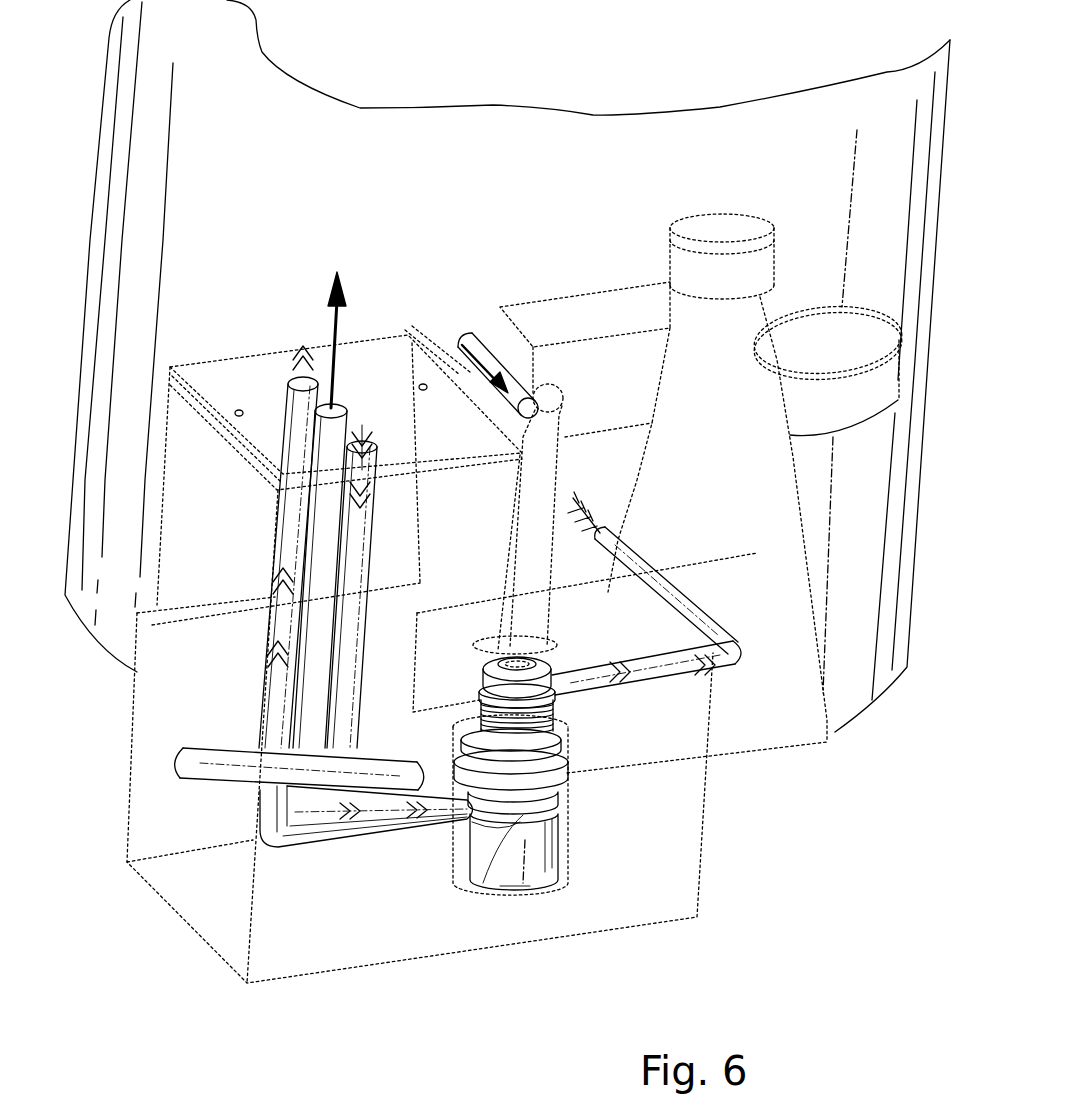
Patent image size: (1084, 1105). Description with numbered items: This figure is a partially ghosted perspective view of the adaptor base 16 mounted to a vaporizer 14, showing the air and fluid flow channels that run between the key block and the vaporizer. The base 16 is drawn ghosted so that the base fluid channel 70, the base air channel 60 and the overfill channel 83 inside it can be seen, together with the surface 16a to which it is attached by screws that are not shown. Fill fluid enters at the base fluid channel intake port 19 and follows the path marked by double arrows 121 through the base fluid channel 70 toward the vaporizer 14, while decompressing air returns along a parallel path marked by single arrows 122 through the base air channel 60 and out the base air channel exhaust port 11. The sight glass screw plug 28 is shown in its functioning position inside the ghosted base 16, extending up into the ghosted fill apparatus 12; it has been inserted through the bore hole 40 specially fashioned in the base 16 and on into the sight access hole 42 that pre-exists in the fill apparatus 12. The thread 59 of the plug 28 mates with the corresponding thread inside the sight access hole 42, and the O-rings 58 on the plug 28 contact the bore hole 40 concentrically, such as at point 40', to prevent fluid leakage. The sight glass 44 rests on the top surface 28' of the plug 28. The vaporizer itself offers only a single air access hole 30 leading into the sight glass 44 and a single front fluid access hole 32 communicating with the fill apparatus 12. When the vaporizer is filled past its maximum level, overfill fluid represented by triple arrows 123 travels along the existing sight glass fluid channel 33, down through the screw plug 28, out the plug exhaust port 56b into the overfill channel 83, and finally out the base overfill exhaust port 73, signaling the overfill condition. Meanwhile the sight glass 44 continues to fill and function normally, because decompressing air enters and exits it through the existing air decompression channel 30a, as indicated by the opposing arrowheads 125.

The base air channel exhaust port 11 is at (332, 393).
The fill apparatus 12 is at (806, 477).
The vaporizer 14 is at (800, 93).
The adaptor base 16 is at (203, 950).
The surface 16a is at (256, 383).
The base fluid channel intake port 19 is at (376, 442).
The sight glass screw plug 28 is at (515, 945).
The top surface of plug 28' is at (502, 662).
The air access hole 30 is at (460, 340).
The air decompression channel 30a is at (450, 357).
The front fluid access hole 32 is at (588, 522).
The sight glass fluid channel 33 is at (677, 593).
The bore hole 40 is at (551, 859).
The contact point 40' is at (577, 868).
The sight access hole 42 is at (640, 777).
The sight glass 44 is at (573, 453).
The plug exhaust port 56b is at (510, 880).
The O-rings 58 is at (507, 818).
The thread 59 is at (567, 720).
The base air channel 60 is at (320, 600).
The base fluid channel 70 is at (360, 505).
The base overfill exhaust port 73 is at (288, 376).
The overfill channel 83 is at (267, 720).
The double arrows 121 is at (368, 440).
The single arrows 122 is at (333, 327).
The triple arrows 123 is at (306, 350).
The opposing arrowheads 125 is at (488, 360).